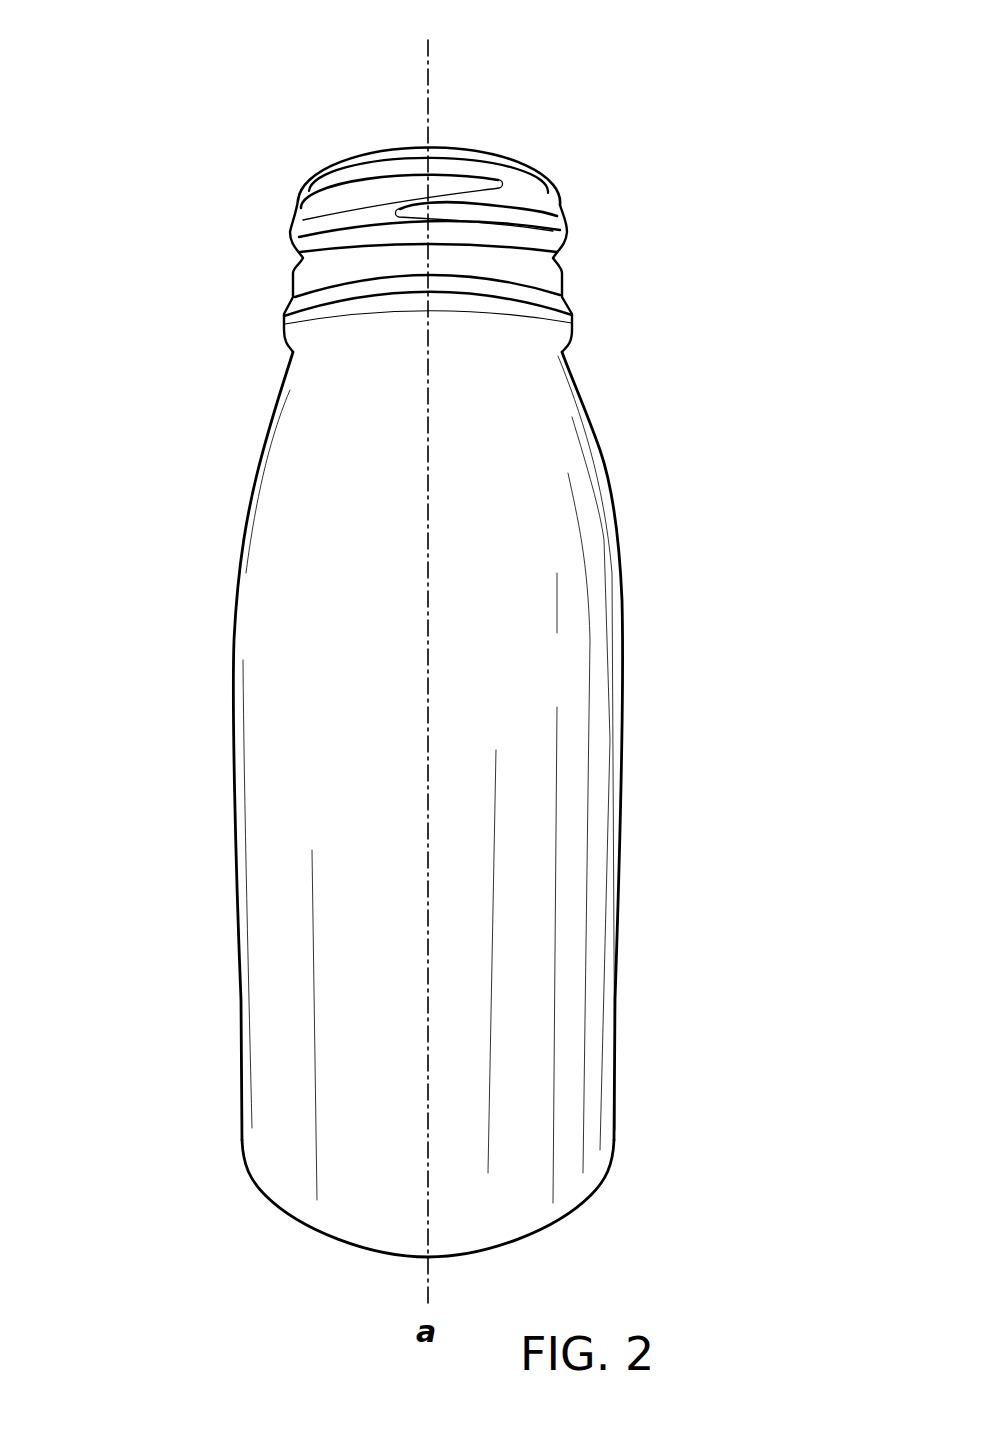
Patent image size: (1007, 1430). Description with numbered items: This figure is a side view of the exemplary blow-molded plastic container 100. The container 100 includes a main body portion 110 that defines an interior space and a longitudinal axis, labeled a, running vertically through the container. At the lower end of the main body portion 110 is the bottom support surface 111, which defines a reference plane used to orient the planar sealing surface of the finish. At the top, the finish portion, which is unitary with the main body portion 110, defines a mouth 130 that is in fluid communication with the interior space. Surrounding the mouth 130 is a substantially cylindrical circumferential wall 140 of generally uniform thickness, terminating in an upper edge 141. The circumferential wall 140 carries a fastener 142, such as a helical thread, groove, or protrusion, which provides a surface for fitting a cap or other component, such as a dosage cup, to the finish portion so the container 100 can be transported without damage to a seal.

The plastic container 100 is at (634, 148).
The main body portion 110 is at (206, 700).
The bottom support surface 111 is at (282, 1208).
The mouth 130 is at (379, 120).
The circumferential wall 140 is at (530, 190).
The upper edge 141 is at (312, 182).
The fastener 142 is at (296, 222).